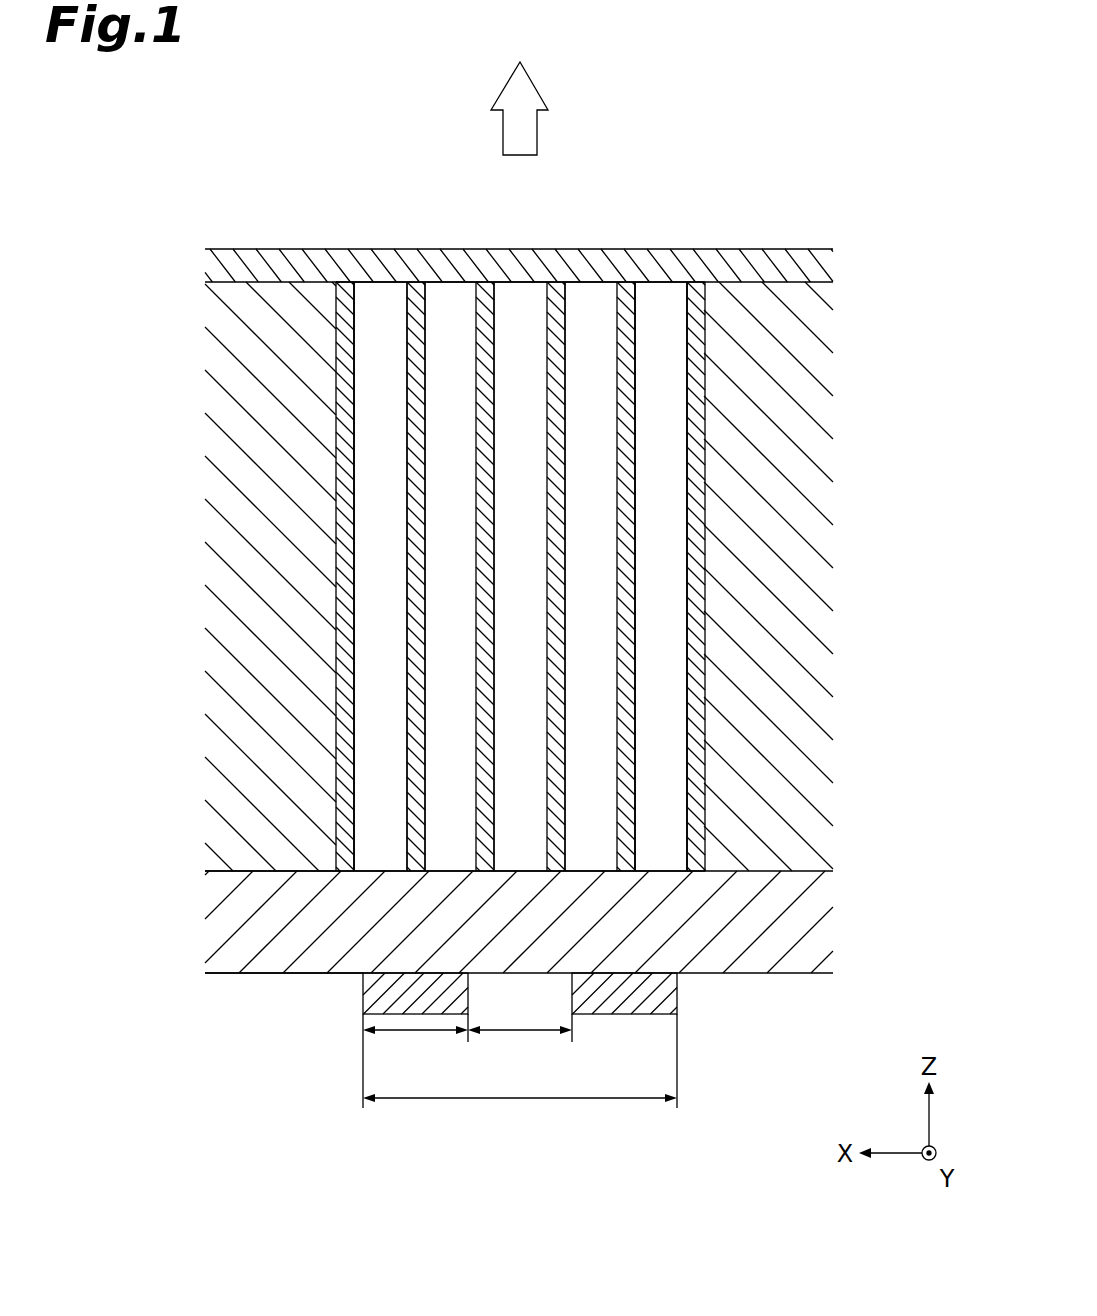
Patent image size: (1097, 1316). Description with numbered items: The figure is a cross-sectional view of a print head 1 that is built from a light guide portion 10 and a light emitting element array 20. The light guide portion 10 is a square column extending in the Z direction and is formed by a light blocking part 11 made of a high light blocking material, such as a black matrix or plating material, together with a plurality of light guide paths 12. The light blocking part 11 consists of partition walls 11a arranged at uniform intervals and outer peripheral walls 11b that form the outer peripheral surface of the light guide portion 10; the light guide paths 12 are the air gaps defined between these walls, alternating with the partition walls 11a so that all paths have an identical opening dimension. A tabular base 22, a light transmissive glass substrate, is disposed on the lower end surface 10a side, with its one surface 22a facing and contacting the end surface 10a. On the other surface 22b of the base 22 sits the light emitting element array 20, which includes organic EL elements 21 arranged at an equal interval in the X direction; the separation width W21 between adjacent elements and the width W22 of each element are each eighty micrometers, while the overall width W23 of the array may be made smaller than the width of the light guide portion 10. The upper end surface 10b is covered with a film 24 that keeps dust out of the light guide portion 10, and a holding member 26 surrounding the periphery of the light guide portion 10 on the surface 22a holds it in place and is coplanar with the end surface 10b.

The print head 1 is at (184, 143).
The light guide portion 10 is at (590, 543).
The end surface 10a is at (672, 872).
The end surface 10b is at (668, 280).
The light blocking part 11 is at (412, 284).
The partition wall 11a is at (425, 347).
The outer peripheral wall 11b is at (355, 430).
The light guide path 12 is at (364, 587).
The light emitting element array 20 is at (505, 1052).
The organic EL element 21 is at (376, 993).
The base 22 is at (524, 923).
The one surface 22a is at (263, 869).
The other surface 22b is at (263, 975).
The film 24 is at (807, 265).
The holding member 26 is at (806, 508).
The separation width W21 is at (520, 1043).
The width W22 is at (415, 1043).
The width W23 is at (520, 1077).